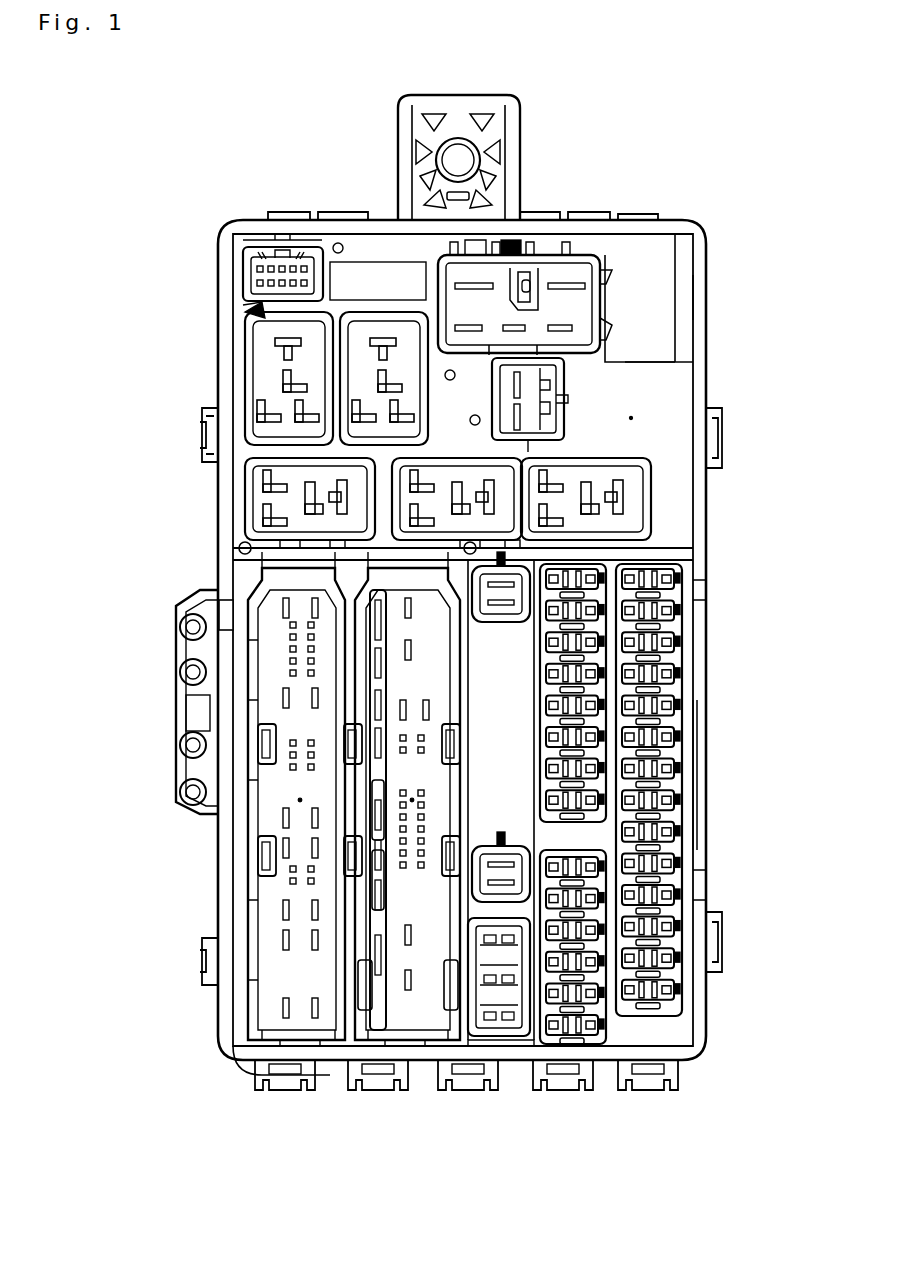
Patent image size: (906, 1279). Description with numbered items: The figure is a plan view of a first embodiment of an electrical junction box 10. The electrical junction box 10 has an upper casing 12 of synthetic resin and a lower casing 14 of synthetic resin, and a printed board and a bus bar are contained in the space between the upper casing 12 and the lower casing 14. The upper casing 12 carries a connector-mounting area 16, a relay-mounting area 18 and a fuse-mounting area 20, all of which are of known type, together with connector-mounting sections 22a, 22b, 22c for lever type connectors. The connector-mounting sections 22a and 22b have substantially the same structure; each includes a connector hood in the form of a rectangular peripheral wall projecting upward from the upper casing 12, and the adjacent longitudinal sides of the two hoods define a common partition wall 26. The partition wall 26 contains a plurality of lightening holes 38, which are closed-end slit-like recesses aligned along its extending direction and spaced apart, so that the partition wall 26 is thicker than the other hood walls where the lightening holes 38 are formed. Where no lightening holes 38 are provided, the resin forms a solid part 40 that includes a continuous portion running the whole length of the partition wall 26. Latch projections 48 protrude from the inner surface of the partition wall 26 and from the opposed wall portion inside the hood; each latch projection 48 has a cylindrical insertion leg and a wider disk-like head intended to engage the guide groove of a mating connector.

The electrical junction box 10 is at (702, 128).
The upper casing 12 is at (660, 285).
The lower casing 14 is at (205, 620).
The connector-mounting area 16 is at (262, 238).
The relay-mounting area 18 is at (238, 322).
The fuse-mounting area 20 is at (666, 602).
The connector-mounting section for lever type connector 22a is at (462, 1046).
The connector-mounting section for lever type connector 22b is at (293, 1042).
The connector-mounting section for lever type connector 22c is at (538, 244).
The partition wall 26 is at (346, 712).
The lightening hole 38 is at (360, 826).
The solid part 40 is at (355, 880).
The latch projection 48 is at (258, 742).